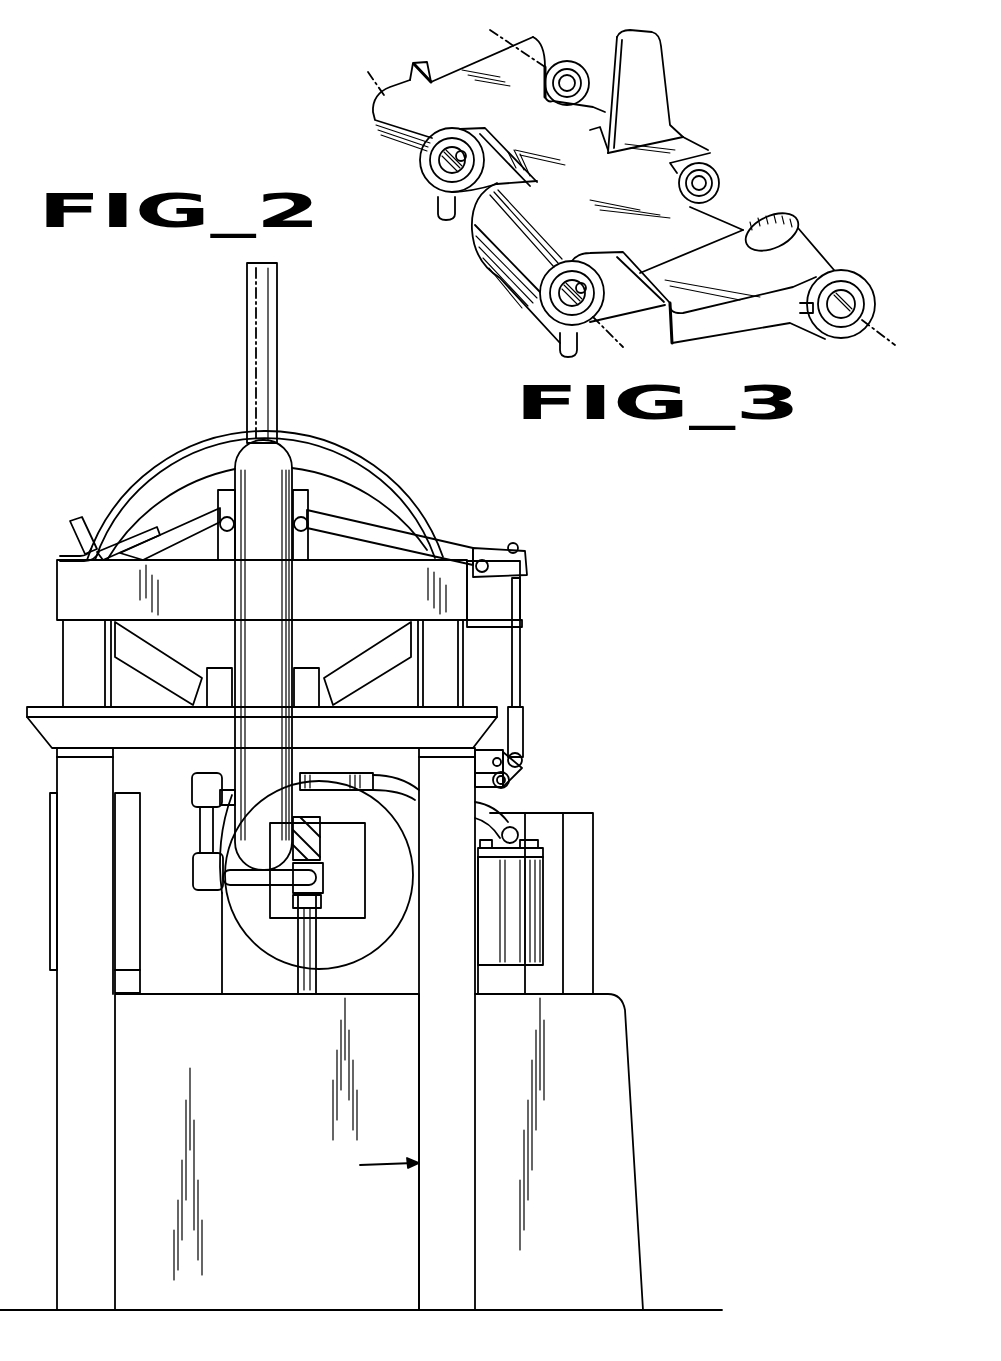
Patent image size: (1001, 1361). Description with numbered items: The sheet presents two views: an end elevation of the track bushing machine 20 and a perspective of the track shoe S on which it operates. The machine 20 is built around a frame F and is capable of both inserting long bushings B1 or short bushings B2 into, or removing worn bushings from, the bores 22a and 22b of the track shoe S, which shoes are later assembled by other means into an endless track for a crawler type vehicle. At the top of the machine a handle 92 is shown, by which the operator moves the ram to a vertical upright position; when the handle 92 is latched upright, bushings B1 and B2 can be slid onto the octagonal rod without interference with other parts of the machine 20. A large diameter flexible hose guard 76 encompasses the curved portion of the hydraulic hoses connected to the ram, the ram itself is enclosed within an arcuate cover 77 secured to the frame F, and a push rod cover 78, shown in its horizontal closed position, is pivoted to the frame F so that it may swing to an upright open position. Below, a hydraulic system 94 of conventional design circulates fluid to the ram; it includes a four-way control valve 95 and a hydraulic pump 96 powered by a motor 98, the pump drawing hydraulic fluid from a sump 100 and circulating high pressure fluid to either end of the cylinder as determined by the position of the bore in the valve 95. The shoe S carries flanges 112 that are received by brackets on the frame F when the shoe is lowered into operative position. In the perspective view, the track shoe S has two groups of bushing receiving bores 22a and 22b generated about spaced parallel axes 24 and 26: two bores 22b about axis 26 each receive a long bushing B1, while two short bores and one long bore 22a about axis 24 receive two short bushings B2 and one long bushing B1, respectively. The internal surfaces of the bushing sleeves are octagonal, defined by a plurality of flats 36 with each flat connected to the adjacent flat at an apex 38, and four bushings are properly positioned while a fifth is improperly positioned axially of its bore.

In FIG. 2, the track bushing method and machine 20 is at (316, 400).
In FIG. 2, the handle 92 is at (247, 337).
In FIG. 2, the flexible hose guard 76 is at (292, 590).
In FIG. 2, the arcuate cover 77 is at (372, 462).
In FIG. 2, the push rod cover 78 is at (385, 537).
In FIG. 2, the four-way control valve 95 is at (228, 757).
In FIG. 2, the hydraulic system 94 is at (190, 887).
In FIG. 2, the motor 98 is at (228, 925).
In FIG. 2, the hydraulic pump 96 is at (358, 951).
In FIG. 2, the sump 100 is at (284, 1156).
In FIG. 2, the frame F is at (382, 1167).
In FIG. 3, the track shoe S is at (605, 187).
In FIG. 3, the bores 22a is at (563, 82).
In FIG. 3, the bores 22b is at (452, 140).
In FIG. 3, the long bushing B1 is at (445, 171).
In FIG. 3, the short bushing B2 is at (570, 82).
In FIG. 3, the flats 36 is at (447, 157).
In FIG. 3, the apex 38 is at (443, 173).
In FIG. 3, the flanges 112 is at (500, 280).
In FIG. 3, the axis 24 is at (482, 40).
In FIG. 3, the axis 26 is at (356, 72).